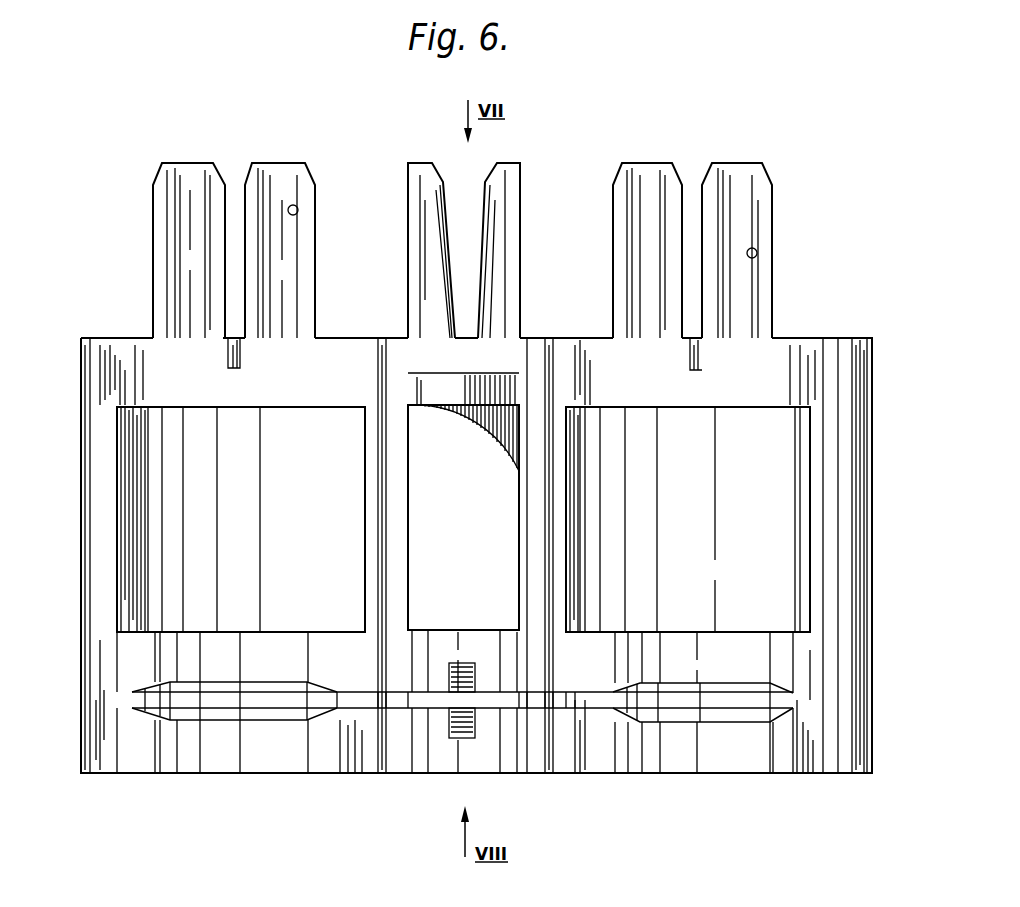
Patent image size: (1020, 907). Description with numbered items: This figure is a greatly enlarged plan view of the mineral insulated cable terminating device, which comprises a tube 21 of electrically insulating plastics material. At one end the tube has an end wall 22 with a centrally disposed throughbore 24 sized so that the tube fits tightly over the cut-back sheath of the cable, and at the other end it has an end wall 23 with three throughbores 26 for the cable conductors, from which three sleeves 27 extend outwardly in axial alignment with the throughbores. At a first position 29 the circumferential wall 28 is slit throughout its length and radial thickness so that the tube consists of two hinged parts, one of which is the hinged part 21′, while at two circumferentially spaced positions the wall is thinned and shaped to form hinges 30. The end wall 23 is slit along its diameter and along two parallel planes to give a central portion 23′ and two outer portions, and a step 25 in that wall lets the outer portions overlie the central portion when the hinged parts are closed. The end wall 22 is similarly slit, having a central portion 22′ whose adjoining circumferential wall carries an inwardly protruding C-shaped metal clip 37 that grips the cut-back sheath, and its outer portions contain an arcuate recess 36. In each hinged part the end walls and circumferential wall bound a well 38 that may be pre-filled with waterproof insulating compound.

The tube 21 is at (146, 778).
The hinged part of the tube 21′ is at (875, 586).
The end wall 22 is at (796, 756).
The central portion of the end wall 22′ is at (487, 765).
The end wall 23 is at (598, 358).
The central portion of the end wall 23′ is at (457, 353).
The throughbore 24 is at (767, 753).
The step 25 is at (413, 383).
The throughbore 26 is at (297, 212).
The sleeve 27 is at (415, 195).
The circumferential wall 28 is at (102, 698).
The first position 29 is at (80, 462).
The hinge 30 is at (388, 373).
The recess 36 is at (678, 703).
The metal clip 37 is at (443, 703).
The well 38 is at (175, 560).